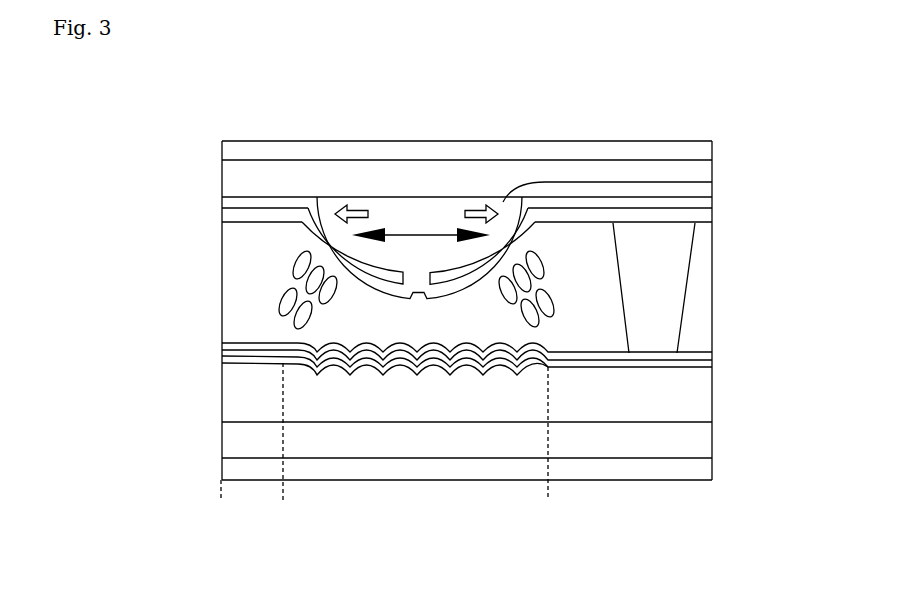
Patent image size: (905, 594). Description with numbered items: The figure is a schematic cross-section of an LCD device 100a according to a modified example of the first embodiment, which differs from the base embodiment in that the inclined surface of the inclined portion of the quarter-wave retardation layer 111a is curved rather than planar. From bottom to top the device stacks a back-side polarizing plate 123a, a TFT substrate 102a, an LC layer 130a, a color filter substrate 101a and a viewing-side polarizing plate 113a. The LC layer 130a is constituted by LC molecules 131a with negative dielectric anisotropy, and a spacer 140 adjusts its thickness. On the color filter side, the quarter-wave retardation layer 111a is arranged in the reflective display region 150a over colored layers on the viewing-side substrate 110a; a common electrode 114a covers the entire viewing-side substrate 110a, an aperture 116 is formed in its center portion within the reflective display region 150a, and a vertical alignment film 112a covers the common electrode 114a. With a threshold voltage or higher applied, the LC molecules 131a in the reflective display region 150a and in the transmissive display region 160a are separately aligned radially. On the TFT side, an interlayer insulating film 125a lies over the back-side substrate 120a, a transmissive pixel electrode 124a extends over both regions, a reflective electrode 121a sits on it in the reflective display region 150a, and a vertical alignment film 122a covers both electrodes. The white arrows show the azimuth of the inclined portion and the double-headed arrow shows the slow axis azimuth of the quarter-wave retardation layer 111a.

The LCD device 100a is at (758, 94).
The color filter substrate 101a is at (810, 150).
The TFT substrate 102a is at (132, 485).
The viewing-side substrate 110a is at (700, 176).
The λ/4 retardation layer 111a is at (712, 190).
The vertical alignment film 112a is at (705, 220).
The viewing-side polarizing plate 113a is at (700, 155).
The common electrode 114a is at (708, 205).
The aperture 116 is at (418, 274).
The back-side substrate 120a is at (225, 440).
The reflective electrode 121a is at (297, 353).
The vertical alignment film 122a is at (297, 345).
The back-side polarizing plate 123a is at (225, 468).
The transmissive pixel electrode 124a is at (225, 362).
The interlayer insulating film 125a is at (225, 396).
The LC layer 130a is at (247, 253).
The LC molecules 131a is at (290, 297).
The spacer 140 is at (673, 287).
The reflective display region 150a is at (548, 500).
The transmissive display region 160a is at (283, 500).